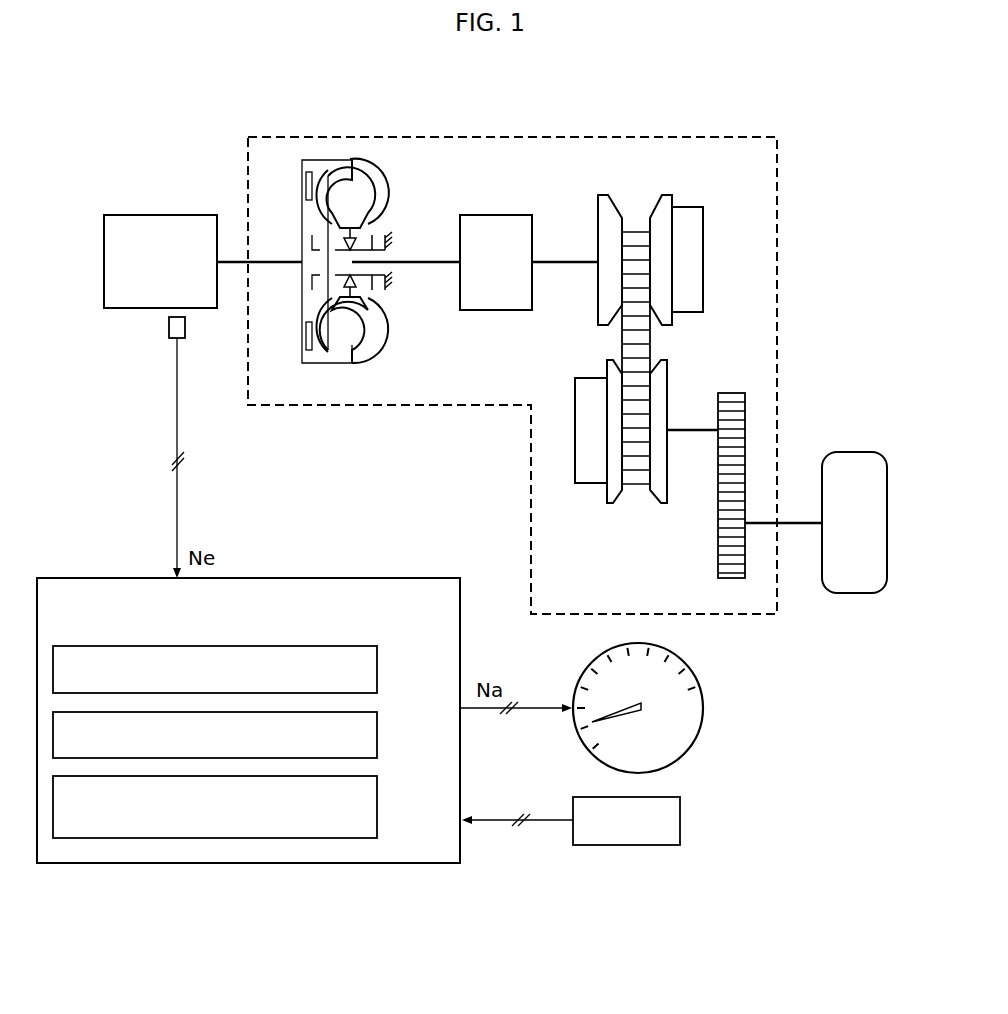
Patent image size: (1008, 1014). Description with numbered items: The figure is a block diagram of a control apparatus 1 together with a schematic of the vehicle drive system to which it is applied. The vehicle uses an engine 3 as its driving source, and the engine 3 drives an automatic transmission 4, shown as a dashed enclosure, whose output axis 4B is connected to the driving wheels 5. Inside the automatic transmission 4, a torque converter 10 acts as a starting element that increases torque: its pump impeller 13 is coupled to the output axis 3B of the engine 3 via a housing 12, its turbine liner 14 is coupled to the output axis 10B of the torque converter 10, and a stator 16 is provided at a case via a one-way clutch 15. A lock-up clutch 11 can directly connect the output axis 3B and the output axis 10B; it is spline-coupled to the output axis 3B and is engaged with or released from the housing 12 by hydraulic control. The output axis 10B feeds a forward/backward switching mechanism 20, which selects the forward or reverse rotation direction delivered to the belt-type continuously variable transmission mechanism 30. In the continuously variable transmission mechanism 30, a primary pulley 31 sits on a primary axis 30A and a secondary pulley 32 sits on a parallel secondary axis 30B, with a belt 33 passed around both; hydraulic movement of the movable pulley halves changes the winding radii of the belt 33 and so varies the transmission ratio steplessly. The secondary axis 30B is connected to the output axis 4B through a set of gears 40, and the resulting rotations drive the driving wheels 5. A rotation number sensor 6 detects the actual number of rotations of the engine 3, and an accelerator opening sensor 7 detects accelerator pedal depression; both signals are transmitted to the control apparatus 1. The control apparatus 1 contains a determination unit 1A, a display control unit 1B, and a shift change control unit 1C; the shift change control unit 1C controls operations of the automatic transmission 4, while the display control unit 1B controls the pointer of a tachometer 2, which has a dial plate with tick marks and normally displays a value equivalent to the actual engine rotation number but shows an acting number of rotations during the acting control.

The control apparatus 1 is at (248, 696).
The determination unit 1A is at (377, 668).
The display control unit 1B is at (377, 734).
The shift change control unit 1C is at (377, 800).
The tachometer 2 is at (703, 710).
The engine 3 is at (128, 215).
The output axis 3B is at (228, 262).
The automatic transmission 4 is at (760, 614).
The output axis 4B is at (788, 522).
The driving wheels 5 is at (852, 593).
The rotation number sensor 6 is at (168, 328).
The accelerator opening sensor 7 is at (680, 822).
The torque converter 10 is at (319, 272).
The output axis 10B is at (420, 262).
The lock-up clutch 11 is at (302, 298).
The housing 12 is at (315, 160).
The pump impeller 13 is at (374, 170).
The turbine liner 14 is at (327, 345).
The one-way clutch 15 is at (345, 246).
The stator 16 is at (352, 300).
The forward/backward switching mechanism 20 is at (500, 215).
The belt-type continuously variable transmission mechanism 30 is at (667, 330).
The primary axis 30A is at (568, 262).
The secondary axis 30B is at (686, 432).
The primary pulley 31 is at (616, 196).
The secondary pulley 32 is at (604, 490).
The belt 33 is at (652, 340).
The set of gears 40 is at (712, 522).